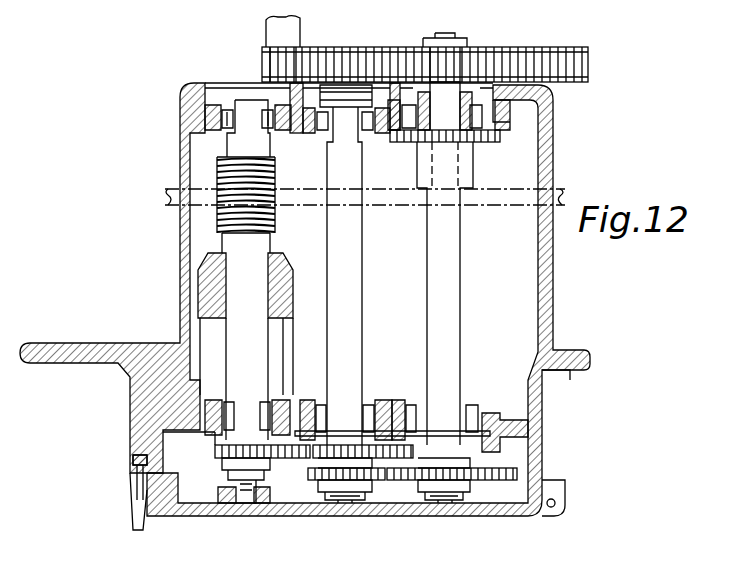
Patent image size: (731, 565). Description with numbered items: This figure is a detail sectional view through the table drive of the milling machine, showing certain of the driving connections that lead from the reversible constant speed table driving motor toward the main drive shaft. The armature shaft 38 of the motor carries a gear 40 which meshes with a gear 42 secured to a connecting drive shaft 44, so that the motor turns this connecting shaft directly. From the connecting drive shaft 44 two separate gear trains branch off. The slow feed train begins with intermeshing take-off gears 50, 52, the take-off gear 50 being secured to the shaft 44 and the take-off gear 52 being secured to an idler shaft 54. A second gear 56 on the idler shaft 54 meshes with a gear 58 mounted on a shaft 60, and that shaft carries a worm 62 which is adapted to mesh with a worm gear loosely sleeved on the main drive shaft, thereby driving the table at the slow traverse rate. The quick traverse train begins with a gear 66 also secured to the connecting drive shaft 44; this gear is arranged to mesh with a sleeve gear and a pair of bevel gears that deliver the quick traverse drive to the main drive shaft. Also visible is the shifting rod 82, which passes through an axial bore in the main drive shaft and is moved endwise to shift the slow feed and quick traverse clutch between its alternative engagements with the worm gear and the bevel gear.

The armature shaft 38 is at (280, 28).
The gear 40 is at (268, 61).
The gear 42 is at (588, 67).
The connecting drive shaft 44 is at (445, 239).
The take-off gear 50 is at (510, 479).
The take-off gear 52 is at (365, 471).
The idler shaft 54 is at (346, 265).
The second gear 56 is at (312, 457).
The gear 58 is at (217, 449).
The shaft 60 is at (245, 270).
The worm 62 is at (218, 166).
The gear 66 is at (488, 142).
The shifting rod 82 is at (170, 206).